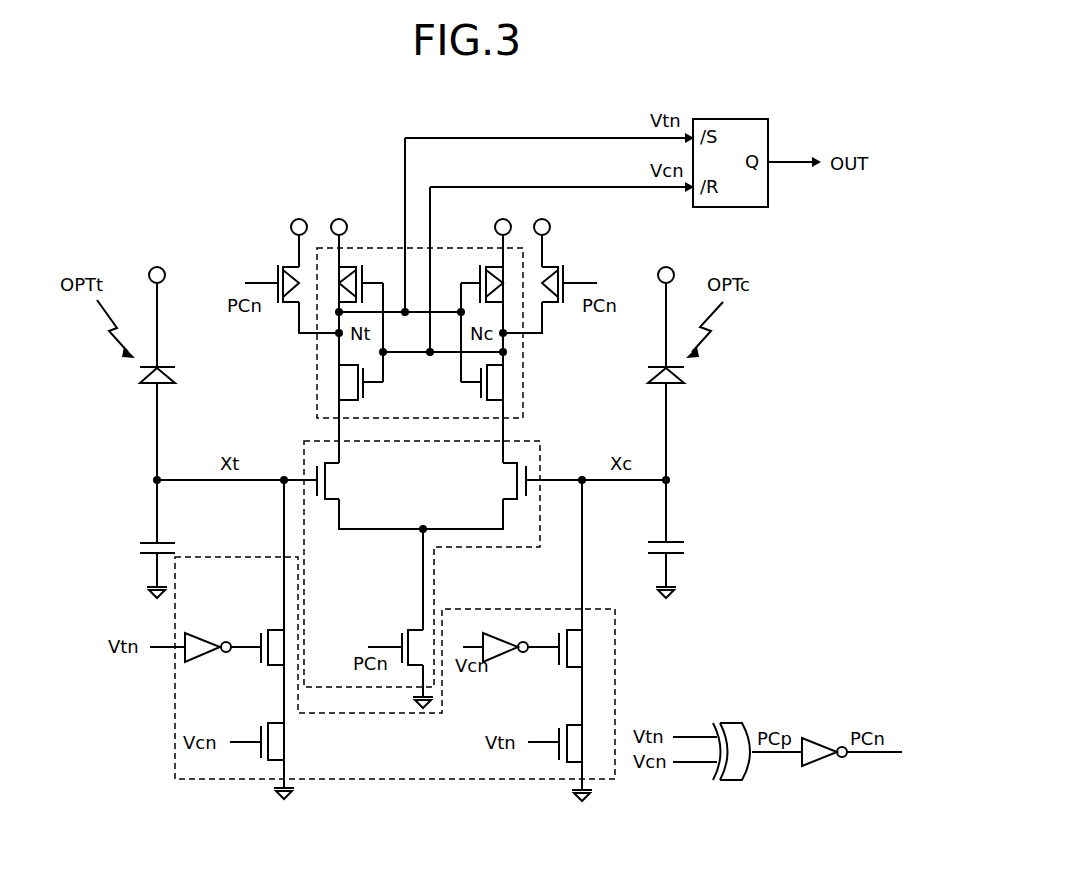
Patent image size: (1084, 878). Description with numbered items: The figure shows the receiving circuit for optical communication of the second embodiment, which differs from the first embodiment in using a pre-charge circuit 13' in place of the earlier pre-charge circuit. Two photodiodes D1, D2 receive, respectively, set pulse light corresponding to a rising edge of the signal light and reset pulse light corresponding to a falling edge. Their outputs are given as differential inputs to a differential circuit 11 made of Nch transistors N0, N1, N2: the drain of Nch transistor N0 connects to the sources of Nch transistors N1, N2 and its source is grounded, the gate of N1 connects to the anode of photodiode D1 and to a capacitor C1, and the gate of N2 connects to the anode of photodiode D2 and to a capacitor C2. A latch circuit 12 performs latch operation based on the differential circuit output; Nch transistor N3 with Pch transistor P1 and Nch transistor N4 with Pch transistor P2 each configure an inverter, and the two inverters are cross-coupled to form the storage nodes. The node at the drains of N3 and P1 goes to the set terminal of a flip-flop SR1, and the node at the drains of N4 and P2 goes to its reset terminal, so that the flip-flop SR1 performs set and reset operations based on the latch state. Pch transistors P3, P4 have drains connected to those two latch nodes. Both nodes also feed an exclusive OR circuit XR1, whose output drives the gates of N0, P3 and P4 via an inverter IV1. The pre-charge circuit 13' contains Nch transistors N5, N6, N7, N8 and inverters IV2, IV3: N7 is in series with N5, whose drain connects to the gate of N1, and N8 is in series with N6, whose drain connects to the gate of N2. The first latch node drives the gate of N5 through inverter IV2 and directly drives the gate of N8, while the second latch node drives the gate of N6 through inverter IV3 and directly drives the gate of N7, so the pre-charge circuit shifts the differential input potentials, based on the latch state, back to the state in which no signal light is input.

The Pch transistor P1 is at (362, 266).
The Pch transistor P2 is at (479, 268).
The Pch transistor P3 is at (277, 272).
The Pch transistor P4 is at (565, 272).
The Nch transistor N0 is at (400, 637).
The Nch transistor N1 is at (332, 480).
The Nch transistor N2 is at (510, 480).
The Nch transistor N3 is at (354, 381).
The Nch transistor N4 is at (490, 381).
The Nch transistor N5 is at (272, 648).
The Nch transistor N6 is at (570, 648).
The Nch transistor N7 is at (258, 750).
The Nch transistor N8 is at (561, 750).
The photodiode D1 is at (150, 384).
The photodiode D2 is at (675, 386).
The capacitor C1 is at (150, 541).
The capacitor C2 is at (670, 540).
The inverter IV1 is at (812, 767).
The inverter IV2 is at (193, 662).
The inverter IV3 is at (492, 661).
The exclusive OR circuit XR1 is at (732, 781).
The flip-flop SR1 is at (745, 208).
The differential circuit 11 is at (303, 452).
The latch circuit 12 is at (524, 405).
The pre-charge circuit 13' is at (565, 694).